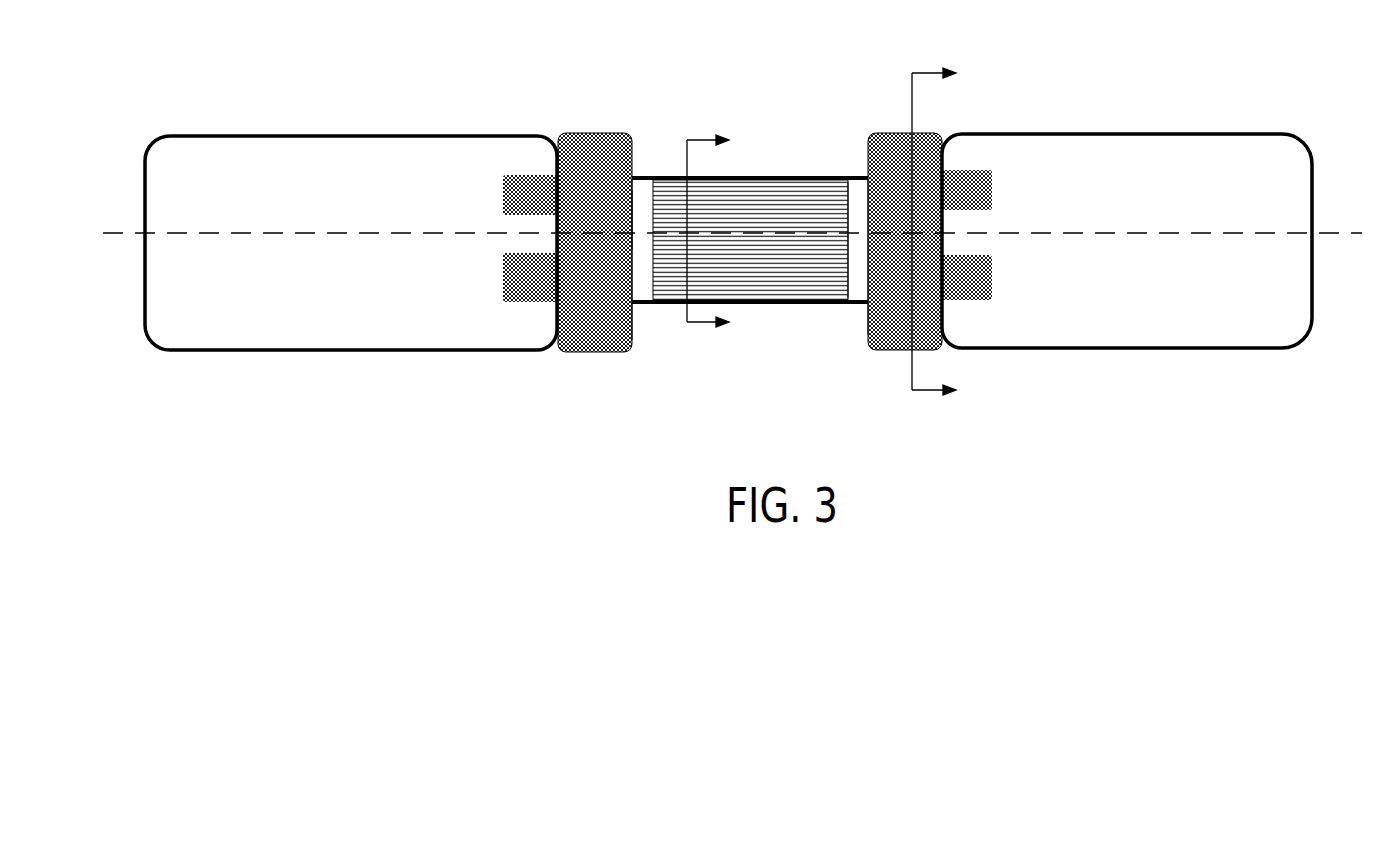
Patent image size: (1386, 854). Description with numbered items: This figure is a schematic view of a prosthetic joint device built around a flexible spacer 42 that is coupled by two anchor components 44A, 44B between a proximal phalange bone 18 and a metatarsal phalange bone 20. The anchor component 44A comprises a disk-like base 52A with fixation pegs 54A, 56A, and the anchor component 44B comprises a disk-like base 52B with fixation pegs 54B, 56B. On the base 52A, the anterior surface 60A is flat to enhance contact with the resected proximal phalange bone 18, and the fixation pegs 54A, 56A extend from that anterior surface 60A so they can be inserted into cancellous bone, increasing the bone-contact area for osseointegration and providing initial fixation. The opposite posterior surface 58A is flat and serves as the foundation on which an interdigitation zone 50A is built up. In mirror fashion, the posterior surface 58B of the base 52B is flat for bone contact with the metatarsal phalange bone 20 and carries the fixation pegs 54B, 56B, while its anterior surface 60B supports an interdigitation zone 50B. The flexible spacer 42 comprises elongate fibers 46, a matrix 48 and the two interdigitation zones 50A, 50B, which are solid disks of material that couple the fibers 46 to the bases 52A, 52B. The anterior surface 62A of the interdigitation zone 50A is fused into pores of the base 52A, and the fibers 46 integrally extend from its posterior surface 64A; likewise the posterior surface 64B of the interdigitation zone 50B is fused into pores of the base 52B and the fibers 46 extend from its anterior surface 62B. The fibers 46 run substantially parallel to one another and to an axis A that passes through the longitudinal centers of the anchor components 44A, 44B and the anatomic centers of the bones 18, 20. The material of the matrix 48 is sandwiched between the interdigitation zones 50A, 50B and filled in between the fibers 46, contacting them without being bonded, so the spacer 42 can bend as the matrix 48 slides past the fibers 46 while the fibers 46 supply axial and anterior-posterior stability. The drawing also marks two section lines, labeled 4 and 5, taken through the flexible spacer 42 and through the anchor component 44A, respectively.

The proximal phalange bone 18 is at (1148, 134).
The metatarsal phalange bone 20 is at (342, 136).
The flexible spacer 42 is at (664, 163).
The anchor component 44A is at (958, 120).
The anchor component 44B is at (570, 120).
The elongate fibers 46 is at (803, 198).
The matrix 48 is at (772, 222).
The interdigitation zone 50A is at (856, 178).
The interdigitation zone 50B is at (643, 176).
The base 52A is at (873, 362).
The base 52B is at (574, 353).
The fixation peg 54A is at (993, 185).
The fixation peg 54B is at (503, 185).
The fixation peg 56A is at (993, 278).
The fixation peg 56B is at (503, 280).
The posterior surface 58A is at (866, 318).
The posterior surface 58B is at (557, 168).
The anterior surface 60A is at (942, 318).
The anterior surface 60B is at (632, 325).
The anterior surface 62A is at (868, 210).
The anterior surface 62B is at (650, 212).
The posterior surface 64A is at (847, 255).
The posterior surface 64B is at (630, 220).
The section line 4- 4 is at (718, 232).
The section line 5- 5 is at (943, 232).
The axis A is at (1353, 232).